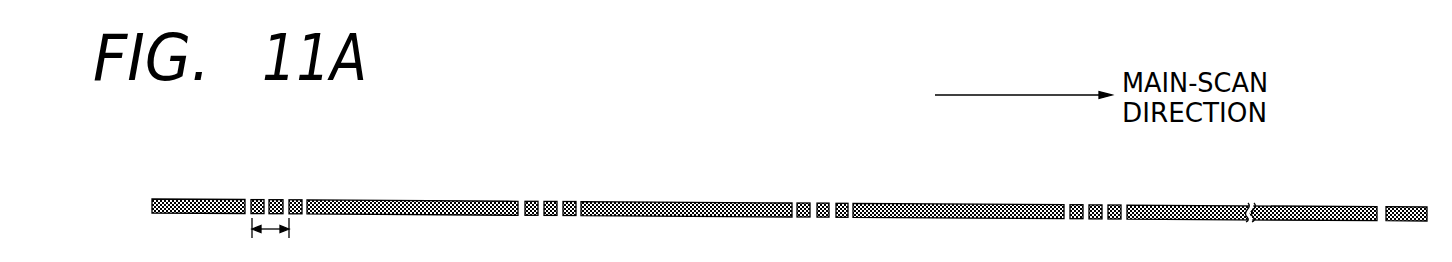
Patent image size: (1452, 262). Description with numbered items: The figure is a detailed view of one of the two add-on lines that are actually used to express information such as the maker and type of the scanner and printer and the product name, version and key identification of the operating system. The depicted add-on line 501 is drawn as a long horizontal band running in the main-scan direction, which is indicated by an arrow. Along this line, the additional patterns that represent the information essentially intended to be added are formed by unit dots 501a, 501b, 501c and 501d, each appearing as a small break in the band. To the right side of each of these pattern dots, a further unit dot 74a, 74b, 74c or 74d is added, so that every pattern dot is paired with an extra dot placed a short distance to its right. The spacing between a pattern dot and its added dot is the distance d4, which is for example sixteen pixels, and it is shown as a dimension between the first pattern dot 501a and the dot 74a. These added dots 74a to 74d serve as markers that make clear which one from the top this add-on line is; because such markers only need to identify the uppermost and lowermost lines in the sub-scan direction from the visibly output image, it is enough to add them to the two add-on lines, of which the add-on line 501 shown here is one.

The add-on line 501 is at (1391, 207).
The unit dot of additional pattern 501a is at (253, 200).
The unit dot of additional pattern 501b is at (527, 201).
The unit dot of additional pattern 501c is at (801, 203).
The unit dot of additional pattern 501d is at (1076, 205).
The unit dot 74a is at (297, 200).
The unit dot 74b is at (570, 202).
The unit dot 74c is at (841, 203).
The unit dot 74d is at (1113, 205).
The distance d4 is at (270, 240).